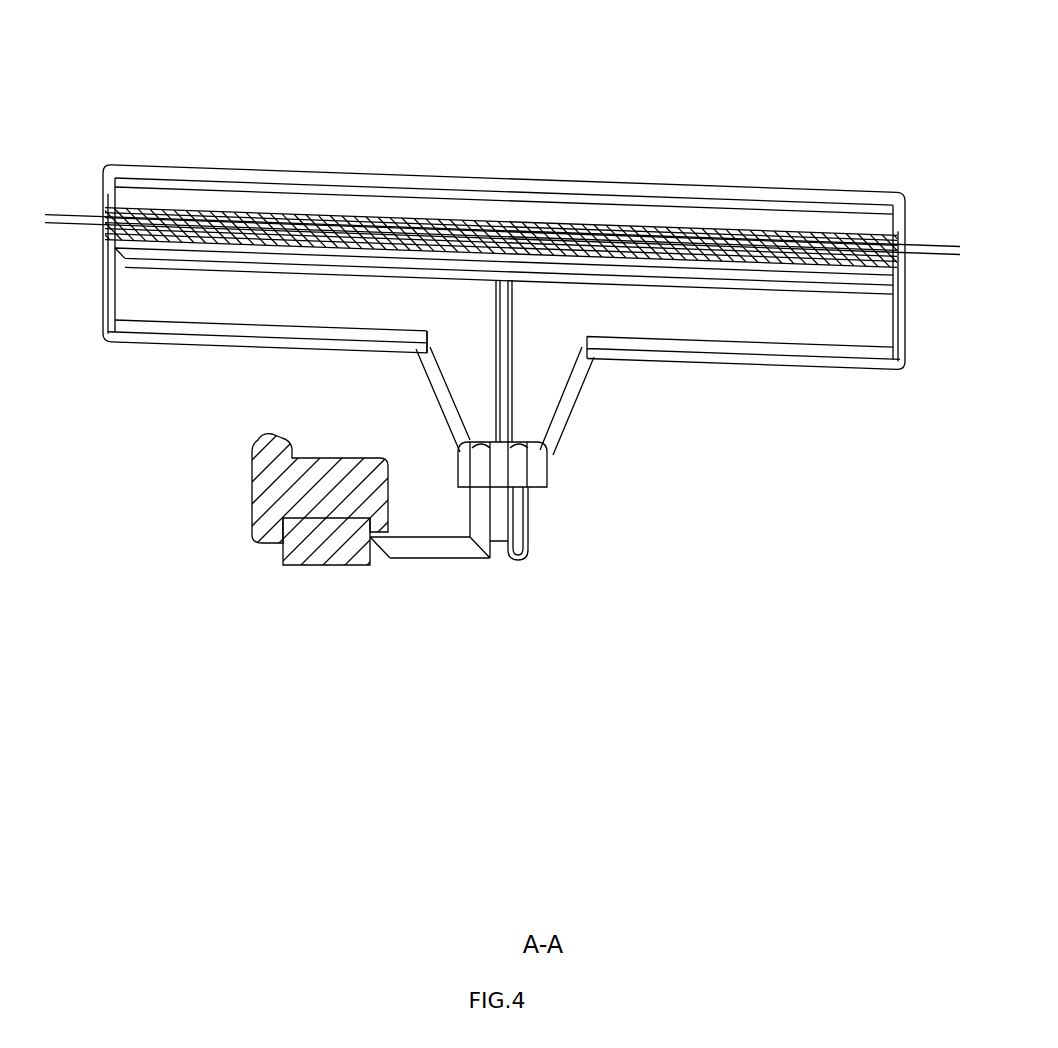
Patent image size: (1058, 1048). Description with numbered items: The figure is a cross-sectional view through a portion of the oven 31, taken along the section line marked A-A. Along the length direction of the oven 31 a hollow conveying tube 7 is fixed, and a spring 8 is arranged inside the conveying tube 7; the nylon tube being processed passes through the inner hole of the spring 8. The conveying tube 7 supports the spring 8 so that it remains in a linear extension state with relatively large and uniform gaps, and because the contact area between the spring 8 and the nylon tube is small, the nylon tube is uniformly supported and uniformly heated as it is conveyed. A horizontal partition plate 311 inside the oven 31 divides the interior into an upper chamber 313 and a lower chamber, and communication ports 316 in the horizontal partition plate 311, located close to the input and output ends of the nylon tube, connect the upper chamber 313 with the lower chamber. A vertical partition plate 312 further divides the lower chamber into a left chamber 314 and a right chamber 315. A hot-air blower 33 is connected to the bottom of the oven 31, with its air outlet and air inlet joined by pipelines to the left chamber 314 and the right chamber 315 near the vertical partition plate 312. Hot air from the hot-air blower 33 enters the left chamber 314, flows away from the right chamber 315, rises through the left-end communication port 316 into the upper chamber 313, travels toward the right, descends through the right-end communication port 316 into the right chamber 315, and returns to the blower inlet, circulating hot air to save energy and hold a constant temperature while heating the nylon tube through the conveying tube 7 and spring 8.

The oven 31 is at (163, 167).
The hollow conveying tube 7 is at (257, 213).
The spring 8 is at (352, 215).
The upper chamber 313 is at (565, 213).
The left chamber 314 is at (188, 318).
The right chamber 315 is at (660, 327).
The horizontal partition plate 311 is at (748, 287).
The communication ports 316 is at (878, 287).
The vertical partition plate 312 is at (508, 400).
The hot-air blower 33 is at (368, 563).